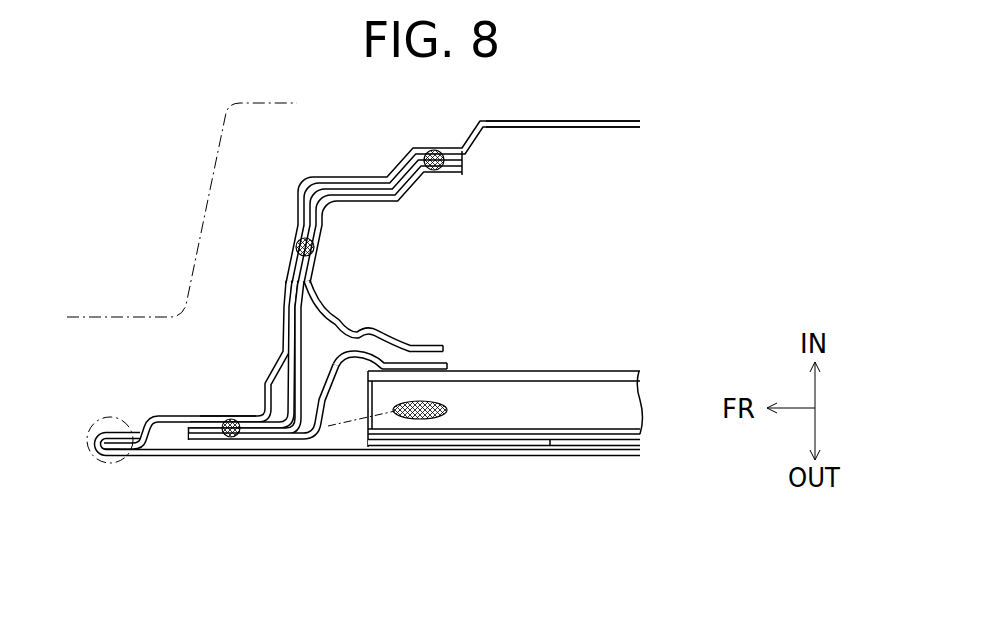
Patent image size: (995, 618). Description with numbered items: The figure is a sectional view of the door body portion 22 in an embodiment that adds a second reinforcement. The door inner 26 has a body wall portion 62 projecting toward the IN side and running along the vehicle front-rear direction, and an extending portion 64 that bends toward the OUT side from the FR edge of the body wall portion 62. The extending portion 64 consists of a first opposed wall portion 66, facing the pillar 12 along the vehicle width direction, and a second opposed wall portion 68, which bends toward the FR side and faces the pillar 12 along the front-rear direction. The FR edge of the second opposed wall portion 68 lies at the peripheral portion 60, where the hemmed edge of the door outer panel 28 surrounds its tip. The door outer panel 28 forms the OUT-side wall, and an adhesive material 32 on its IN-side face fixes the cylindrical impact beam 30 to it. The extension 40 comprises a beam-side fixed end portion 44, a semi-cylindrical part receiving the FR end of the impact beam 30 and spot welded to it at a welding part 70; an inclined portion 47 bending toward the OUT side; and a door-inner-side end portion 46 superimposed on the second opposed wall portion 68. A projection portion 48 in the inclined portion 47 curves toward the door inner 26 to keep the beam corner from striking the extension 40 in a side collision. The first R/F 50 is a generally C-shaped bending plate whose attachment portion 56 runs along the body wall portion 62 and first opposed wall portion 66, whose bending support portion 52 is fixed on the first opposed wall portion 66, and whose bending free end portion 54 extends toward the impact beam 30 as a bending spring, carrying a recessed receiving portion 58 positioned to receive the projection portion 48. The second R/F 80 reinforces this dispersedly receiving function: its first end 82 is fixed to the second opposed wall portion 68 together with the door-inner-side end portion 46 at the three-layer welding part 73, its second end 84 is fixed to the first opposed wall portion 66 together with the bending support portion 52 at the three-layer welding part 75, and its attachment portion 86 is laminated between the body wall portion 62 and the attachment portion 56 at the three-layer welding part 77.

The pillar 12 is at (163, 302).
The door body portion 22 is at (655, 125).
The door inner 26 is at (582, 129).
The door outer panel 28 is at (582, 458).
The impact beam 30 is at (577, 395).
The adhesive material 32 is at (487, 448).
The extension 40 is at (382, 513).
The beam-side fixed end portion 44 is at (372, 407).
The door-inner-side end portion 46 is at (193, 440).
The inclined portion 47 is at (301, 434).
The projection portion 48 is at (344, 364).
The first R/F 50 is at (474, 198).
The bending support portion 52 is at (318, 244).
The bending free end portion 54 is at (413, 343).
The attachment portion 56 is at (413, 190).
The receiving portion 58 is at (371, 322).
The peripheral portion 60 is at (93, 462).
The body wall portion 62 is at (338, 177).
The extending portion 64 is at (110, 334).
The first opposed wall portion 66 is at (283, 343).
The second opposed wall portion 68 is at (172, 414).
The welding part 70 is at (425, 407).
The welding part 73 is at (240, 416).
The welding part 75 is at (299, 247).
The welding part 77 is at (433, 150).
The second R/F 80 is at (287, 311).
The first end 82 is at (228, 424).
The second end 84 is at (299, 259).
The attachment portion 86 is at (385, 190).